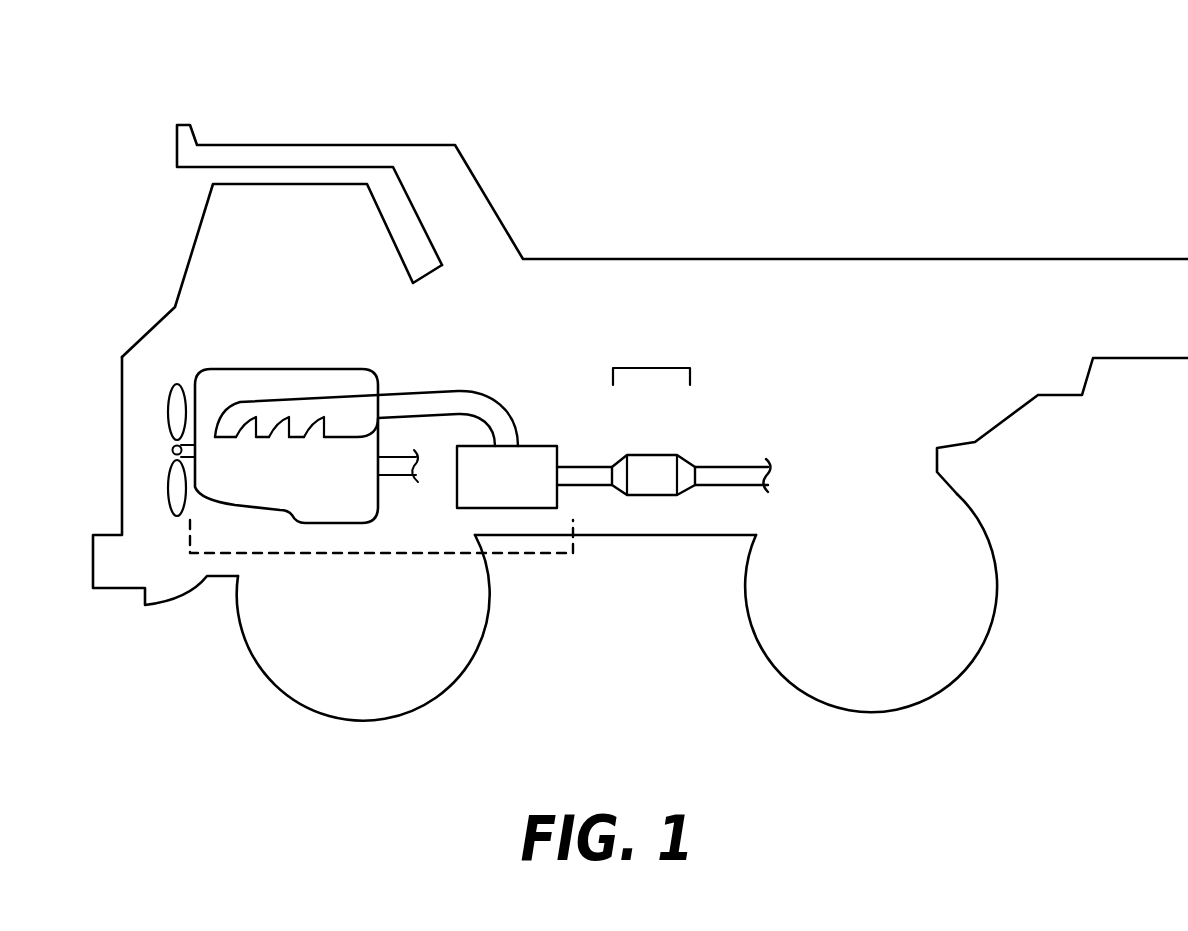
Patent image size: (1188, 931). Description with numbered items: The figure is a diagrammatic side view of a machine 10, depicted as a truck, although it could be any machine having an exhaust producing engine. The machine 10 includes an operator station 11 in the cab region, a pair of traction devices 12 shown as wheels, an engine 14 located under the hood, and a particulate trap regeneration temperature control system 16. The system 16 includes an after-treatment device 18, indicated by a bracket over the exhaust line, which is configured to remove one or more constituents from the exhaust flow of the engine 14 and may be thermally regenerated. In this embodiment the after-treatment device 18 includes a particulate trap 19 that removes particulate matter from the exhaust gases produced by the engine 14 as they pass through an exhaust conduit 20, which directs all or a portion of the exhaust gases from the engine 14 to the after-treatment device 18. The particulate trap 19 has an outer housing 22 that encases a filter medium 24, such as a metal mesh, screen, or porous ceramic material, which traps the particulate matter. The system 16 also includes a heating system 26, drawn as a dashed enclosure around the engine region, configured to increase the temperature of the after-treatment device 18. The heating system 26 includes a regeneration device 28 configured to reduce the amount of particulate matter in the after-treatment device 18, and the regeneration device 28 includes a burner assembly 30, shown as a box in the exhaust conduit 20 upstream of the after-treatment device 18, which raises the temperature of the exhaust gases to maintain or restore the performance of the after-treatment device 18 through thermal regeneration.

The machine 10 is at (640, 321).
The operator station 11 is at (308, 285).
The traction devices 12 is at (433, 677).
The engine 14 is at (332, 503).
The particulate trap regeneration temperature control system 16 is at (494, 388).
The after-treatment device 18 is at (663, 368).
The particulate trap 19 is at (646, 436).
The exhaust conduit 20 is at (438, 392).
The outer housing 22 is at (669, 463).
The filter medium 24 is at (655, 462).
The heating system 26 is at (381, 565).
The regeneration device 28 is at (449, 530).
The burner assembly 30 is at (490, 491).